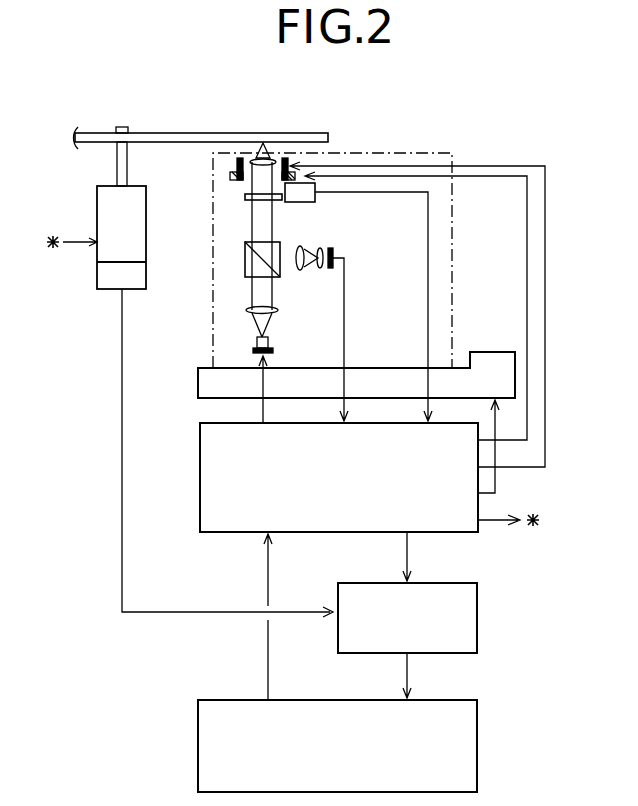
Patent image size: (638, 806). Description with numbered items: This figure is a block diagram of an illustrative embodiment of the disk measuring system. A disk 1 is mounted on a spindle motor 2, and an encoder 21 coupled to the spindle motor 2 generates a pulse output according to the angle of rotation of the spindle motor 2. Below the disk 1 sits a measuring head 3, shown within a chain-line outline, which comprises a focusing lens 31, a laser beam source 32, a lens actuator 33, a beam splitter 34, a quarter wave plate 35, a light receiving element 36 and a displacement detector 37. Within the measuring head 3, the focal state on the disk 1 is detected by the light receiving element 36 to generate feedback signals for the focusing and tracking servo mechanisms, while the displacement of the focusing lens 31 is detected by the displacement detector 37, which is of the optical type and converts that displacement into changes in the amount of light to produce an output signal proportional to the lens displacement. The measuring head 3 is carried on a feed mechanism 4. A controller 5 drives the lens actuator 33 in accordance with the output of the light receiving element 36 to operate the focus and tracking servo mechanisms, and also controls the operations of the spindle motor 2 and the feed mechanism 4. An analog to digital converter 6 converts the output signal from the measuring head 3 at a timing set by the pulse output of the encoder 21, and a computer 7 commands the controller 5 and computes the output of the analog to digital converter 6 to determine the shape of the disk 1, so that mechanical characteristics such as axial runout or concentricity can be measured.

The disk 1 is at (181, 133).
The spindle motor 2 is at (97, 205).
The encoder 21 is at (97, 278).
The measuring head 3 is at (455, 151).
The focusing lens 31 is at (265, 150).
The laser beam source 32 is at (257, 342).
The lens actuator 33 is at (318, 166).
The beam splitter 34 is at (245, 270).
The quarter wave plate 35 is at (245, 197).
The light receiving element 36 is at (331, 248).
The displacement detector 37 is at (330, 178).
The feed mechanism 4 is at (515, 378).
The controller 5 is at (200, 483).
The analog to digital converter 6 is at (477, 618).
The computer 7 is at (477, 745).